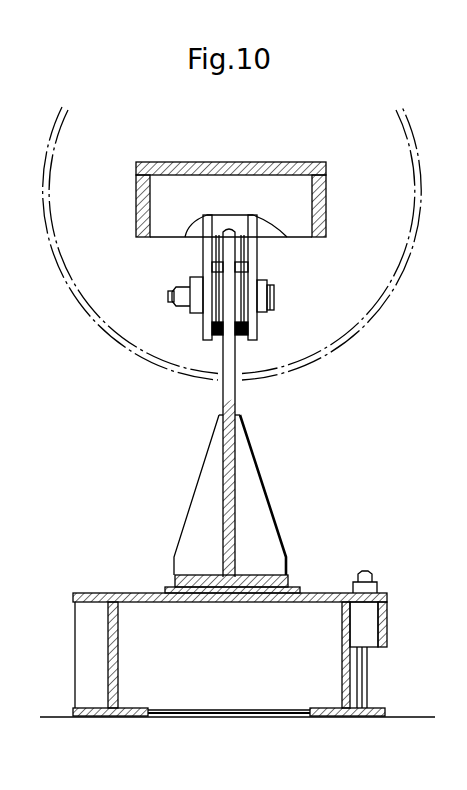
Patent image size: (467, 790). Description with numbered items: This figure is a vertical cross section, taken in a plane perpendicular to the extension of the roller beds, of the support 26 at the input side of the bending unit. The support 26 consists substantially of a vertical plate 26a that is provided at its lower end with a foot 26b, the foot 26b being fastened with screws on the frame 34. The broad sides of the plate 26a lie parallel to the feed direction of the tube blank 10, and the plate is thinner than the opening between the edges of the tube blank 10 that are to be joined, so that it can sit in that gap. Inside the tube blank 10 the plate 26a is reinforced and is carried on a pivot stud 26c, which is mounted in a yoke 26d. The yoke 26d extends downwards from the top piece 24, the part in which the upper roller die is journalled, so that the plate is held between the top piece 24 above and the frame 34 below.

The tube blank 10 is at (118, 326).
The top piece 24 is at (136, 197).
The support 26 is at (212, 460).
The vertical plate 26a is at (235, 552).
The foot 26b is at (292, 560).
The pivot stud 26c is at (273, 292).
The yoke 26d is at (200, 280).
The frame 34 is at (110, 593).